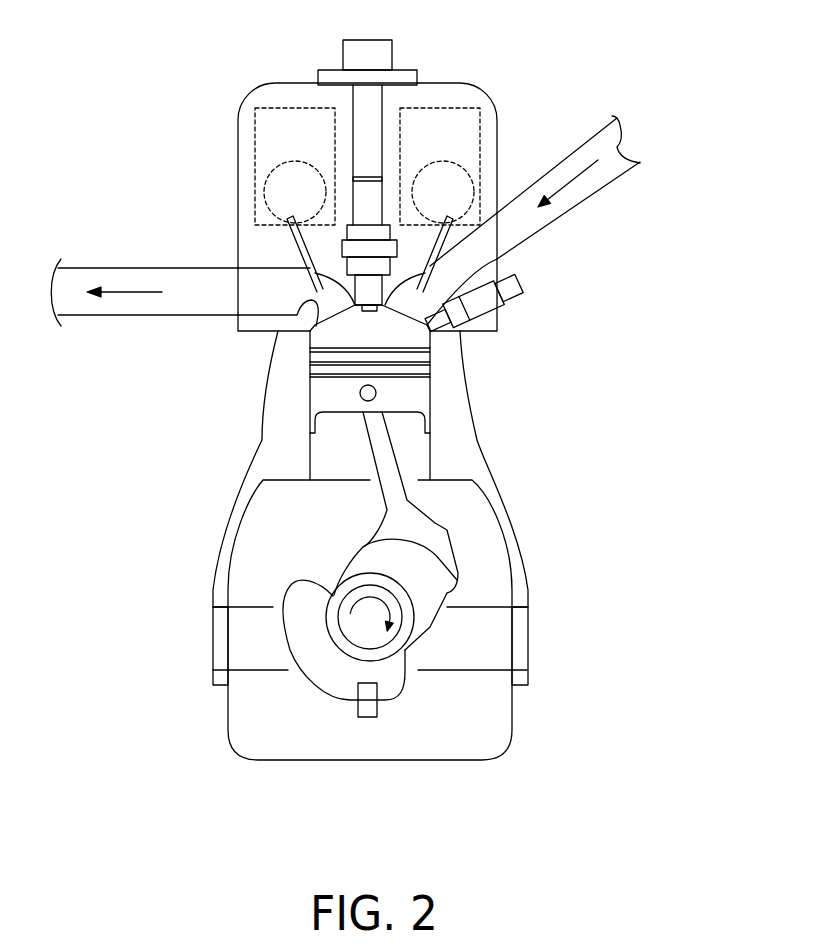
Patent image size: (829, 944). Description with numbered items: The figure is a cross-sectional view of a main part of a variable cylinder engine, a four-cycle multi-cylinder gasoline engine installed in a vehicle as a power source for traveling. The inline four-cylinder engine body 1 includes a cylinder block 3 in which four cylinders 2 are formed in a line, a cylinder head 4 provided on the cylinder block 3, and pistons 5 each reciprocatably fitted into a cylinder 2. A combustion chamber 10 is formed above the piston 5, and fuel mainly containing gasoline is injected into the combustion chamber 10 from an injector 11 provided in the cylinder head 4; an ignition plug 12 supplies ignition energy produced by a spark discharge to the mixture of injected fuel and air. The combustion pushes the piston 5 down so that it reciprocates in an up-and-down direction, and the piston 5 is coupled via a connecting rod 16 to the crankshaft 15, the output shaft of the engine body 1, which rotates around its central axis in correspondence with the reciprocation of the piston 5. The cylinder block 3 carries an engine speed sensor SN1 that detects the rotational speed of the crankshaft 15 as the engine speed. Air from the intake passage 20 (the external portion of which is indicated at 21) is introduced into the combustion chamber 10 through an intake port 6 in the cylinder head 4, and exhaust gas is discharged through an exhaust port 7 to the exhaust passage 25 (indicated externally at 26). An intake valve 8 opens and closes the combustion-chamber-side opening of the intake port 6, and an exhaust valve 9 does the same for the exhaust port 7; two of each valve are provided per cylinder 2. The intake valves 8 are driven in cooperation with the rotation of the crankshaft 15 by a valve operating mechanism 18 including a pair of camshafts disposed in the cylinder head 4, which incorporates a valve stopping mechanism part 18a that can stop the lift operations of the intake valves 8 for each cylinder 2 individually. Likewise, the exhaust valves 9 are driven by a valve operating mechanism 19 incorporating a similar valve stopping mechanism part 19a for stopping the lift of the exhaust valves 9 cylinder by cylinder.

The engine body 1 is at (566, 575).
The cylinder 2 is at (312, 449).
The cylinder block 3 is at (487, 465).
The cylinder head 4 is at (238, 257).
The piston 5 is at (327, 392).
The intake port 6 is at (500, 258).
The exhaust port 7 is at (236, 313).
The intake valve 8 is at (470, 272).
The exhaust valve 9 is at (309, 268).
The combustion chamber 10 is at (370, 335).
The injector 11 is at (488, 331).
The ignition plug 12 is at (368, 225).
The crankshaft 15 is at (350, 633).
The connecting rod 16 is at (403, 513).
The valve operating mechanism 18 is at (462, 108).
The valve stopping mechanism part 18a is at (450, 158).
The valve operating mechanism 19 is at (275, 108).
The valve stopping mechanism part 19a is at (275, 162).
The intake passage 20 is at (614, 187).
The exhaust pipe 21 is at (583, 201).
The exhaust passage 25 is at (137, 331).
The intake pipe 26 is at (105, 315).
The engine speed sensor SN1 is at (365, 717).